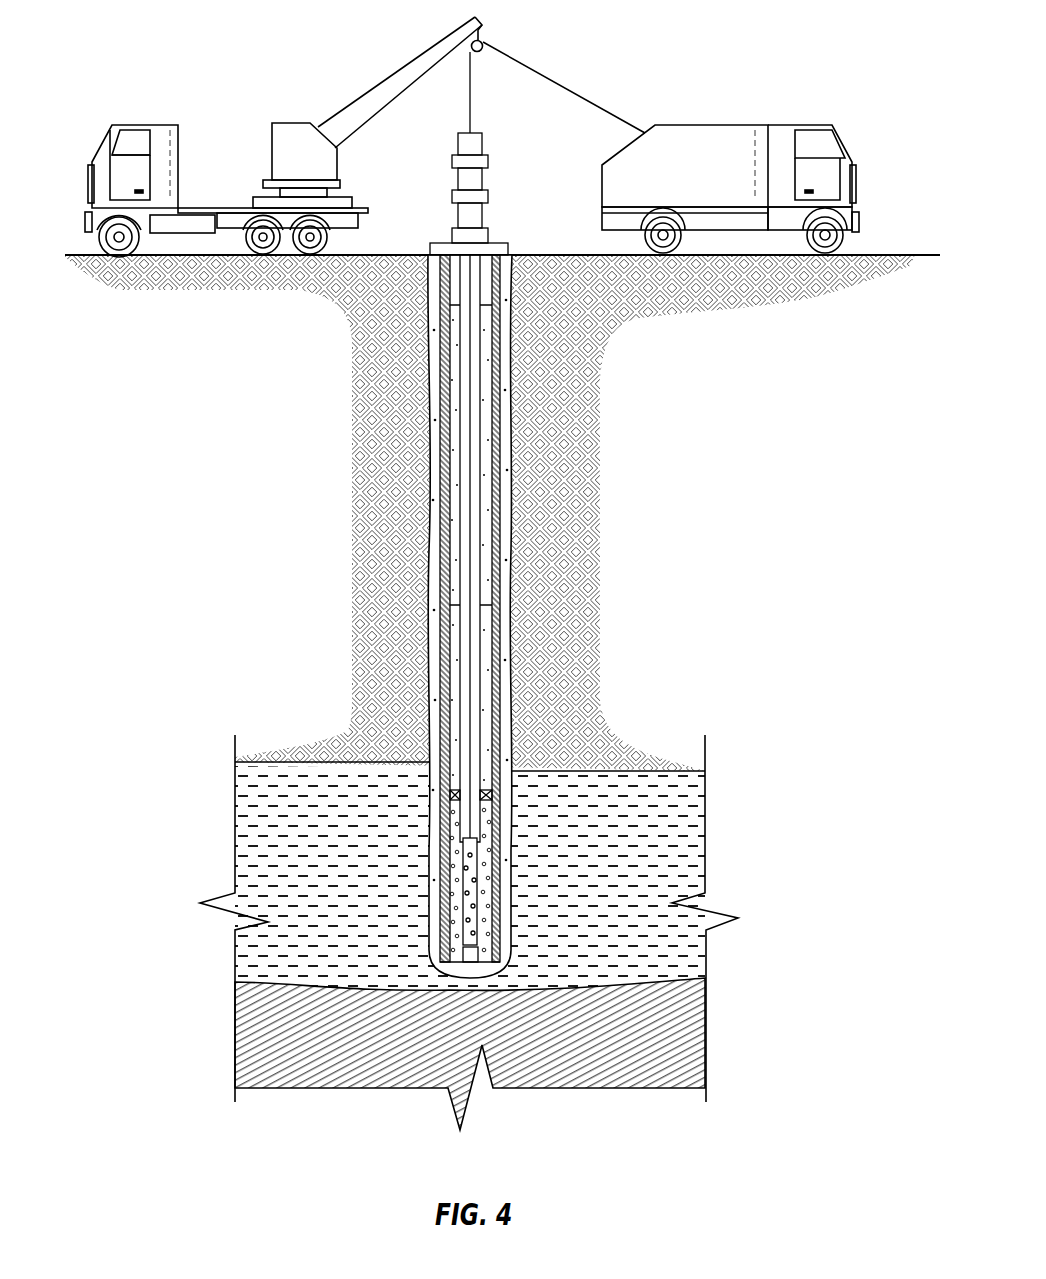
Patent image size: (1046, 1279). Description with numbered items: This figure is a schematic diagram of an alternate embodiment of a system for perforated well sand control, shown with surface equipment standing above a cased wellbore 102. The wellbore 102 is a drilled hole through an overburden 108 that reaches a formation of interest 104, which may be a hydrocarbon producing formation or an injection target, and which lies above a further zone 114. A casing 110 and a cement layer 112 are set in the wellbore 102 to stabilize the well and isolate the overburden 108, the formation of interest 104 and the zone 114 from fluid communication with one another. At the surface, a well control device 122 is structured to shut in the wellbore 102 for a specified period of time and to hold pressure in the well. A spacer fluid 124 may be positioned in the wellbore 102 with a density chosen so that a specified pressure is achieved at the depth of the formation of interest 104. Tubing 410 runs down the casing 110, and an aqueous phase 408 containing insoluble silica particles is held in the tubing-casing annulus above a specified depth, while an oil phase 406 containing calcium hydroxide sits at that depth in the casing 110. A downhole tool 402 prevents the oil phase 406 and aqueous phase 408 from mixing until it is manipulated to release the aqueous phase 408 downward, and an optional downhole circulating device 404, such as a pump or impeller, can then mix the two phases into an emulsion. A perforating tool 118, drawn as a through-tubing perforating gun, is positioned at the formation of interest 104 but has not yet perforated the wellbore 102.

The cased wellbore 102 is at (436, 212).
The formation of interest 104 is at (469, 918).
The overburden 108 is at (812, 322).
The casing 110 is at (497, 270).
The cement layer 112 is at (507, 592).
The zone 114 is at (470, 1054).
The perforating tool 118 is at (478, 863).
The well control device 122 is at (490, 197).
The spacer fluid 124 is at (455, 492).
The downhole tool 402 is at (450, 797).
The downhole circulating device 404 is at (458, 953).
The oil phase 406 is at (455, 855).
The aqueous phase 408 is at (455, 668).
The tubing 410 is at (478, 388).